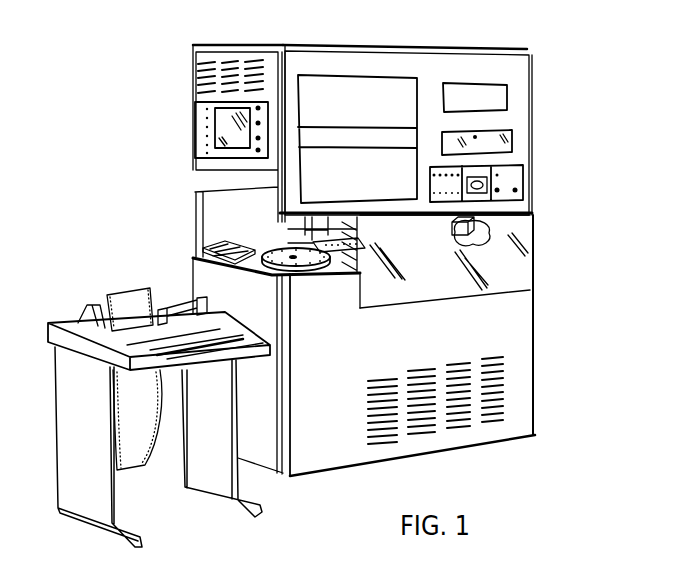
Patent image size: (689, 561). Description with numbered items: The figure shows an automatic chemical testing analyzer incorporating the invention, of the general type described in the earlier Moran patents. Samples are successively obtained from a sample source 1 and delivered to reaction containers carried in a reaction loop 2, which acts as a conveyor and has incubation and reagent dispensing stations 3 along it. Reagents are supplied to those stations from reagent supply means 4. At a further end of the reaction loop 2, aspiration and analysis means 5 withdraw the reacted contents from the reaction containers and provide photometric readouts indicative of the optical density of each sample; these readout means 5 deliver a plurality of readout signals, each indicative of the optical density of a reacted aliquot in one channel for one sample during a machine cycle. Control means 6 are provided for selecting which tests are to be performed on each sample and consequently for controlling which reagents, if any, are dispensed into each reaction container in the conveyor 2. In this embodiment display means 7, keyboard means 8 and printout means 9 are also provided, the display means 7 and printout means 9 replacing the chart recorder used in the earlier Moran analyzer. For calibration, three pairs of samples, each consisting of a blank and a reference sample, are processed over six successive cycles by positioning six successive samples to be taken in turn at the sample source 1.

The sample source 1 is at (265, 280).
The reaction loop 2 is at (303, 240).
The incubation and reagent dispensing stations 3 is at (310, 232).
The reagent supply means 4 is at (512, 333).
The aspiration and analysis means 5 is at (477, 224).
The control means 6 is at (394, 171).
The display means 7 is at (223, 150).
The keyboard means 8 is at (210, 243).
The printout means 9 is at (80, 338).